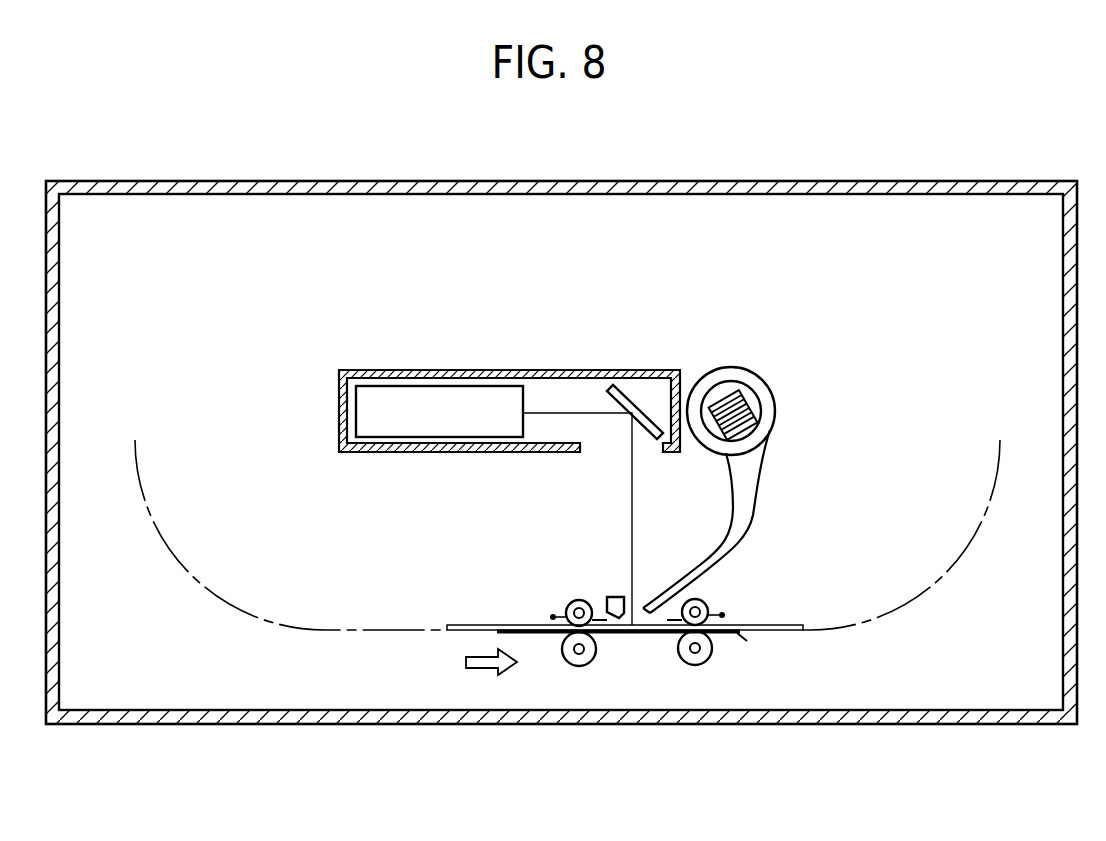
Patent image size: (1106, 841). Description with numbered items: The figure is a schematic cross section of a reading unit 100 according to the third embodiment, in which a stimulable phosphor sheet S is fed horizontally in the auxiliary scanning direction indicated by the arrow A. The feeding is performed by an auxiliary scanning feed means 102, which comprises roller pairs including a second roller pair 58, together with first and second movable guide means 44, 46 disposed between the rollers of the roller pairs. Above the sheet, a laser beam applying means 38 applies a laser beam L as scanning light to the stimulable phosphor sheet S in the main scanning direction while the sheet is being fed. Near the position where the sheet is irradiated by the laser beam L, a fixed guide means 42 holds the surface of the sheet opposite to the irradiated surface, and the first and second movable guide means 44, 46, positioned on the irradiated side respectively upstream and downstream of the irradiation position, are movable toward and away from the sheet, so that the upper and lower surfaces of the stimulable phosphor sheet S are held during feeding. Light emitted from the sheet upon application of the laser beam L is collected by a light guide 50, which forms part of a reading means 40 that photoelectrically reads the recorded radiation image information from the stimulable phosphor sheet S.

The reading unit 100 is at (660, 148).
The laser beam applying means 38 is at (450, 368).
The reading means 40 is at (747, 366).
The fixed guide means 42 is at (633, 634).
The first movable guide means 44 is at (551, 615).
The second movable guide means 46 is at (725, 612).
The light guide 50 is at (752, 482).
The second roller pair 58 is at (695, 666).
The auxiliary scanning feed means 102 is at (656, 729).
The stimulable phosphor sheet S is at (778, 623).
The laser beam L is at (632, 500).
The arrow A is at (506, 665).